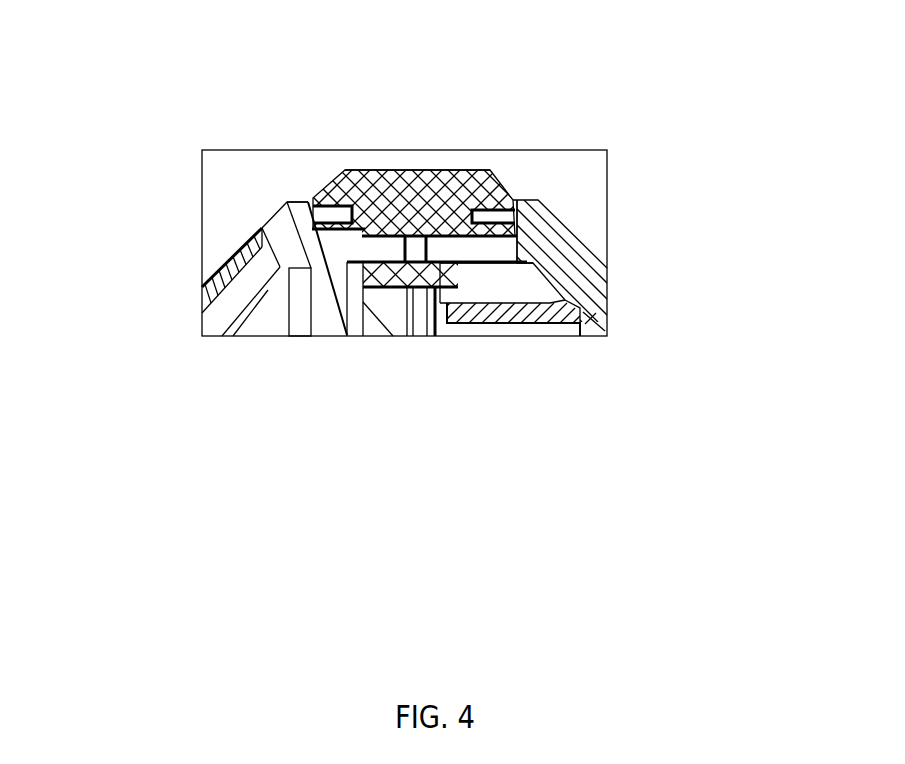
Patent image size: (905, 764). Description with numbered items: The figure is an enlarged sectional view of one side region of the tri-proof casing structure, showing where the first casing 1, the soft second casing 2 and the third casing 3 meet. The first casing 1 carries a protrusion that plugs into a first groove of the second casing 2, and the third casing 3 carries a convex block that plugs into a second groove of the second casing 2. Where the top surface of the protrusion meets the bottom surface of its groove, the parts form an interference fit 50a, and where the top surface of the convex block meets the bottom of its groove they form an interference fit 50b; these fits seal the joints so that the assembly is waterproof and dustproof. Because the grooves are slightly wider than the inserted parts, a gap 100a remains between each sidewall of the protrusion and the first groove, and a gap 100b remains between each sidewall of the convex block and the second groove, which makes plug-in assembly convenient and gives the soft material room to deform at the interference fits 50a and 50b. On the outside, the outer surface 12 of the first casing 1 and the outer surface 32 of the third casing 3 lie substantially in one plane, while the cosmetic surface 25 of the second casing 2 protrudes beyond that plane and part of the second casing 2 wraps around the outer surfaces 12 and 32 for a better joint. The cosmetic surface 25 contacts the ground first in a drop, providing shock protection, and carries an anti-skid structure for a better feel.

The first casing 1 is at (607, 333).
The second casing 2 is at (428, 205).
The third casing 3 is at (310, 340).
The outer surface 12 is at (520, 200).
The cosmetic surface 25 is at (412, 168).
The outer surface 32 is at (298, 198).
The interference fit 50a is at (438, 305).
The interference fit 50b is at (407, 287).
The gap 100a is at (560, 263).
The gap 100b is at (340, 280).